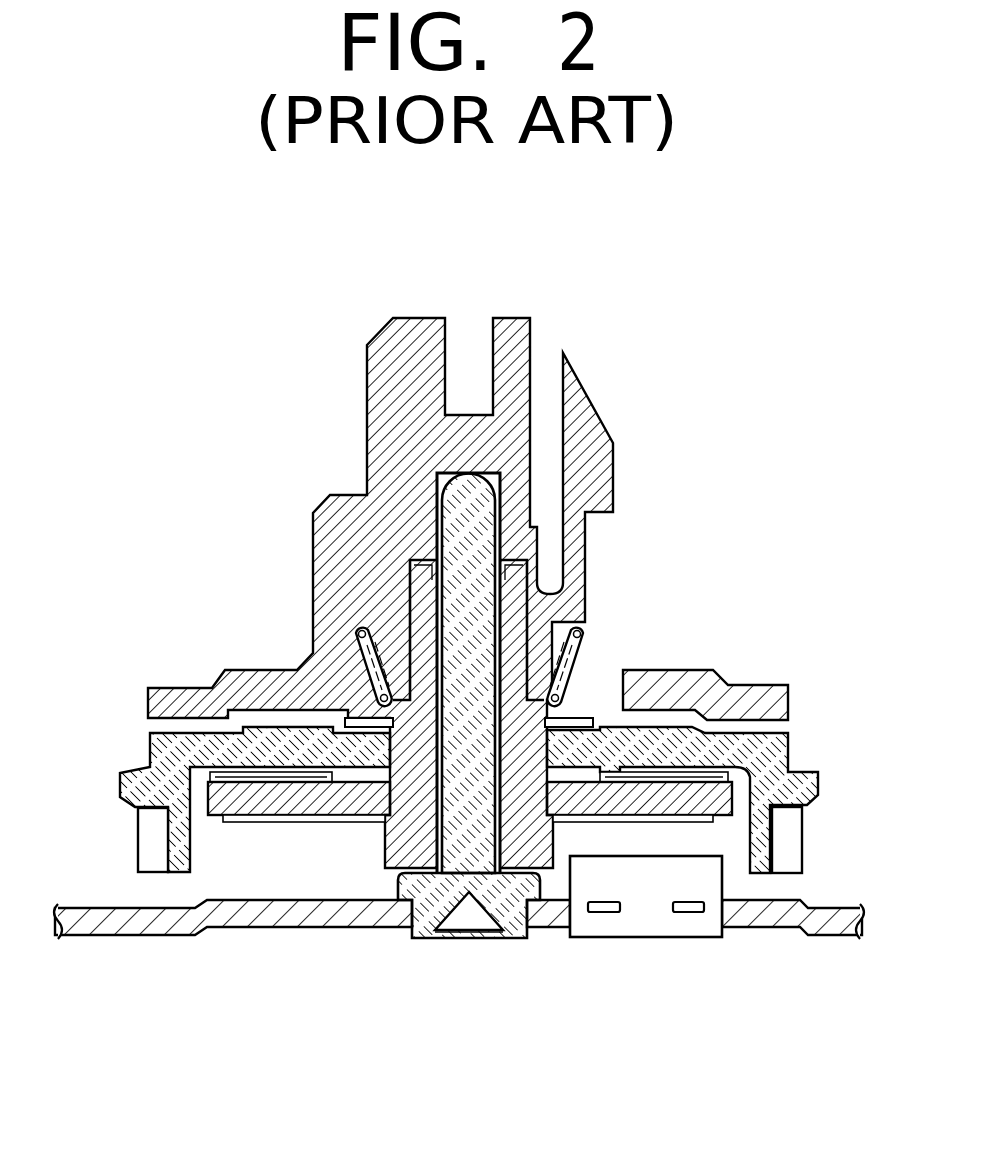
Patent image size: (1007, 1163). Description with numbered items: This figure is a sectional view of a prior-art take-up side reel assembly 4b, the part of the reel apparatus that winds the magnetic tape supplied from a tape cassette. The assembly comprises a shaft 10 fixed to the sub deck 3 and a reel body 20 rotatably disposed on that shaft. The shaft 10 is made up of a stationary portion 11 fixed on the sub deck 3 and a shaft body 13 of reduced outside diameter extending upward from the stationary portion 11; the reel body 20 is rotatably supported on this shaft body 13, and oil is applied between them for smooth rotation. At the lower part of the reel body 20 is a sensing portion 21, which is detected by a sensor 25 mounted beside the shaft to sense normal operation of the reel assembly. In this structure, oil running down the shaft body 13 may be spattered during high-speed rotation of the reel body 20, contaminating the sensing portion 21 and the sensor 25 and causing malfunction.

The sub deck 3 is at (103, 922).
The take-up side reel assembly 4b is at (741, 361).
The shaft 10 is at (396, 787).
The stationary portion 11 is at (423, 920).
The shaft body 13 is at (452, 815).
The reel body 20 is at (469, 595).
The sensing portion 21 is at (703, 820).
The sensor 25 is at (710, 922).